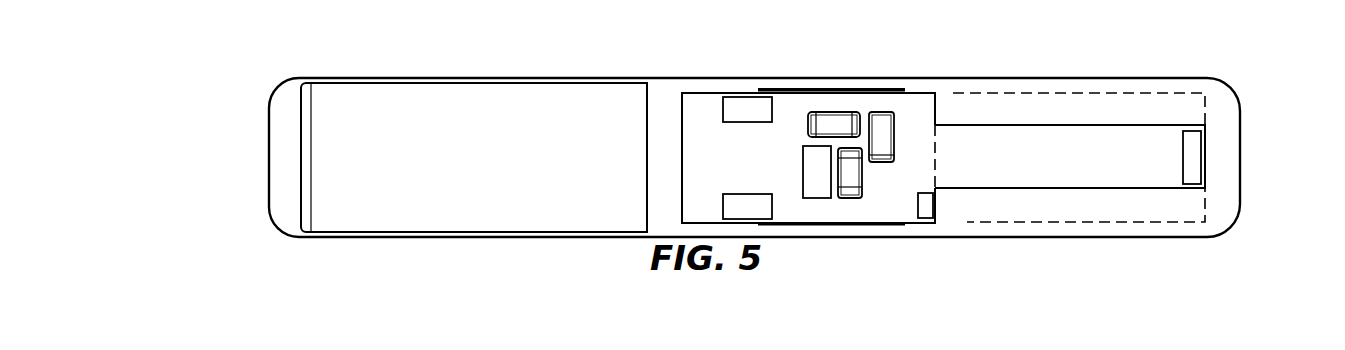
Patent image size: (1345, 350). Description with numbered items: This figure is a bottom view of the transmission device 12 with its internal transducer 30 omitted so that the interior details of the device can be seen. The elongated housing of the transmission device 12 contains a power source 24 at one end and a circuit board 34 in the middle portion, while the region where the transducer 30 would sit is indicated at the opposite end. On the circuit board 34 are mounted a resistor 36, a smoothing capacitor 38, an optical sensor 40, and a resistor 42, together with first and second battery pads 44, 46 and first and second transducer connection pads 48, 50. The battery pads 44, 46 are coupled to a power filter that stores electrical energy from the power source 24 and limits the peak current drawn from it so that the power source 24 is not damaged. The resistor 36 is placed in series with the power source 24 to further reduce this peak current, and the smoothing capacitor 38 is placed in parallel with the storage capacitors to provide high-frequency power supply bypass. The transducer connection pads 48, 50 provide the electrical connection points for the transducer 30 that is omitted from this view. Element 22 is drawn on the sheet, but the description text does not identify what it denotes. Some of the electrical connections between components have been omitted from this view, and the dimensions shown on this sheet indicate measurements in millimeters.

The transmission device 12 is at (1250, 45).
The conductive strips 22 is at (889, 77).
The power source 24 is at (476, 168).
The transducer 30 is at (1165, 92).
The circuit board 34 is at (692, 186).
The resistor 36 is at (829, 122).
The smoothing capacitor 38 is at (882, 125).
The optical sensor 40 is at (818, 187).
The resistor 42 is at (852, 183).
The first battery pad 44 is at (742, 107).
The second battery pad 46 is at (750, 211).
The first transducer connection pad 48 is at (927, 207).
The second transducer connection pad 50 is at (1194, 156).